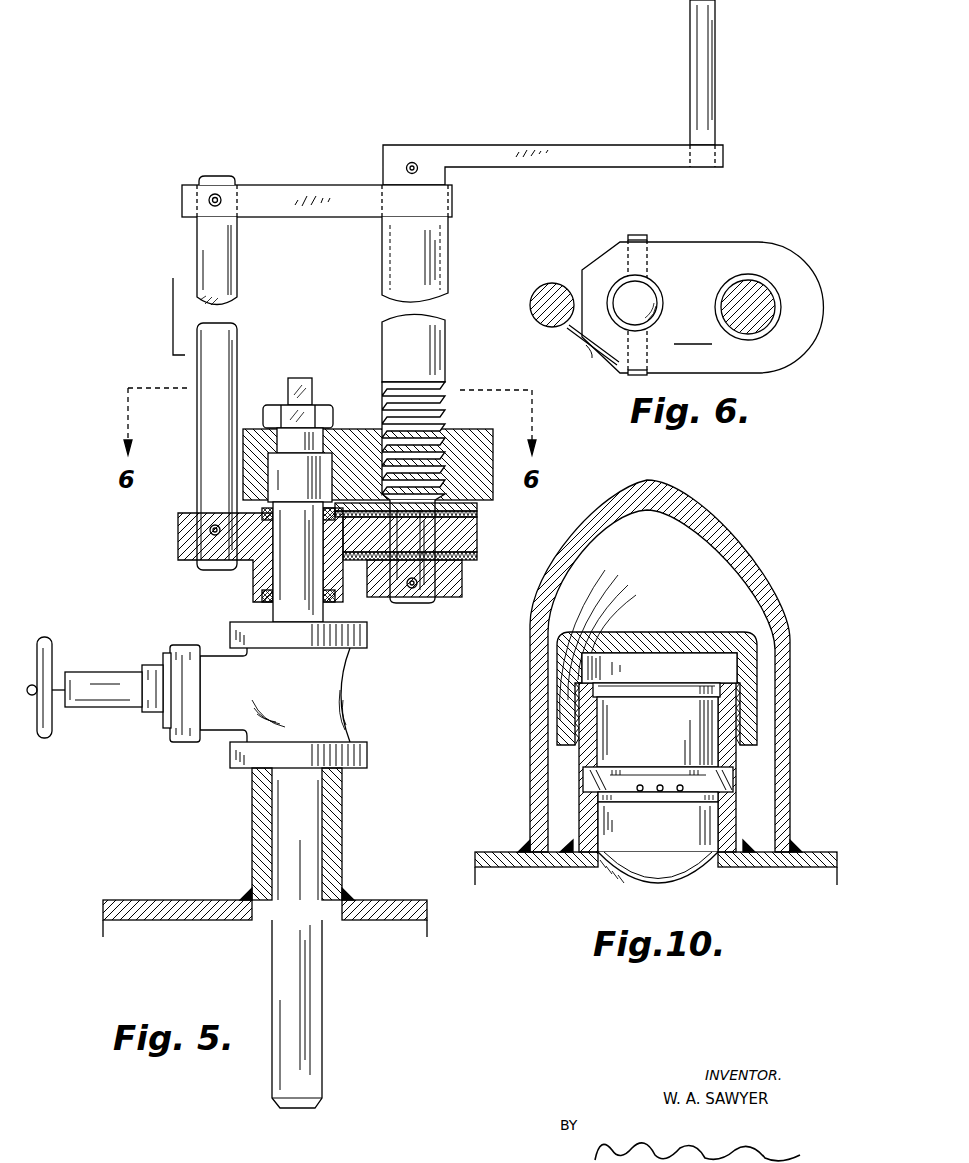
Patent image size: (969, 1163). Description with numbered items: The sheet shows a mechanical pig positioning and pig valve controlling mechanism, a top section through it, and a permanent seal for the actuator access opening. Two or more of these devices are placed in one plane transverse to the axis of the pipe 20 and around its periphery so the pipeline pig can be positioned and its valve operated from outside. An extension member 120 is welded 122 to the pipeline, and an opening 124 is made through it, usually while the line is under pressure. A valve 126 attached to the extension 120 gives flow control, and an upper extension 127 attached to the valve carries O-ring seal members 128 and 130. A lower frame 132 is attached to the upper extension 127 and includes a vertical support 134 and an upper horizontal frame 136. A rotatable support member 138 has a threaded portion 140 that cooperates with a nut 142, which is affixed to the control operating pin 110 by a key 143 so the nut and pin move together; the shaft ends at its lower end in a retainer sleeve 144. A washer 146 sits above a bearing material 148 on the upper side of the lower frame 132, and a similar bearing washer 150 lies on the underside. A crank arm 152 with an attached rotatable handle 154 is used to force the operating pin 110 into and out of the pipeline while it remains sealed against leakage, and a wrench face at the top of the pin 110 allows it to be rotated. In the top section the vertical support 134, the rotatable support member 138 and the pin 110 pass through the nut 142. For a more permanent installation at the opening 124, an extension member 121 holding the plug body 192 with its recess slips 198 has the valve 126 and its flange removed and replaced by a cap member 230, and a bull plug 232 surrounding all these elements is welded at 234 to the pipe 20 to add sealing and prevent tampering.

In FIG. 5, the pipe 20 is at (177, 900).
In FIG. 10, the pipe 20 is at (507, 868).
In FIG. 5, the control operating pin 110 is at (316, 480).
In FIG. 6, the control operating pin 110 is at (644, 290).
In FIG. 5, the extension member 120 is at (342, 828).
In FIG. 10, the extension member 121 is at (735, 790).
In FIG. 5, the weld 122 is at (345, 895).
In FIG. 5, the opening 124 is at (250, 900).
In FIG. 10, the opening 124 is at (700, 869).
In FIG. 5, the valve 126 is at (306, 705).
In FIG. 5, the upper extension 127 is at (345, 601).
In FIG. 5, the O-ring seal member 128 is at (253, 593).
In FIG. 5, the O-ring seal member 130 is at (262, 512).
In FIG. 5, the lower frame 132 is at (470, 538).
In FIG. 5, the vertical support 134 is at (200, 263).
In FIG. 6, the vertical support 134 is at (535, 290).
In FIG. 5, the upper horizontal frame 136 is at (288, 187).
In FIG. 5, the rotatable support member 138 is at (445, 244).
In FIG. 6, the rotatable support member 138 is at (760, 287).
In FIG. 5, the threaded portion 140 is at (447, 392).
In FIG. 5, the nut 142 is at (477, 431).
In FIG. 6, the nut 142 is at (695, 307).
In FIG. 5, the key 143 is at (300, 378).
In FIG. 5, the retainer sleeve 144 is at (455, 583).
In FIG. 5, the washer 146 is at (478, 508).
In FIG. 5, the bearing material 148 is at (480, 516).
In FIG. 5, the bearing washer 150 is at (478, 557).
In FIG. 5, the crank arm 152 is at (463, 147).
In FIG. 5, the rotatable handle 154 is at (692, 33).
In FIG. 10, the plug body 192 is at (718, 755).
In FIG. 10, the recess slips 198 is at (596, 783).
In FIG. 10, the cap member 230 is at (751, 663).
In FIG. 10, the bull plug 232 is at (722, 540).
In FIG. 10, the weld 234 is at (520, 846).